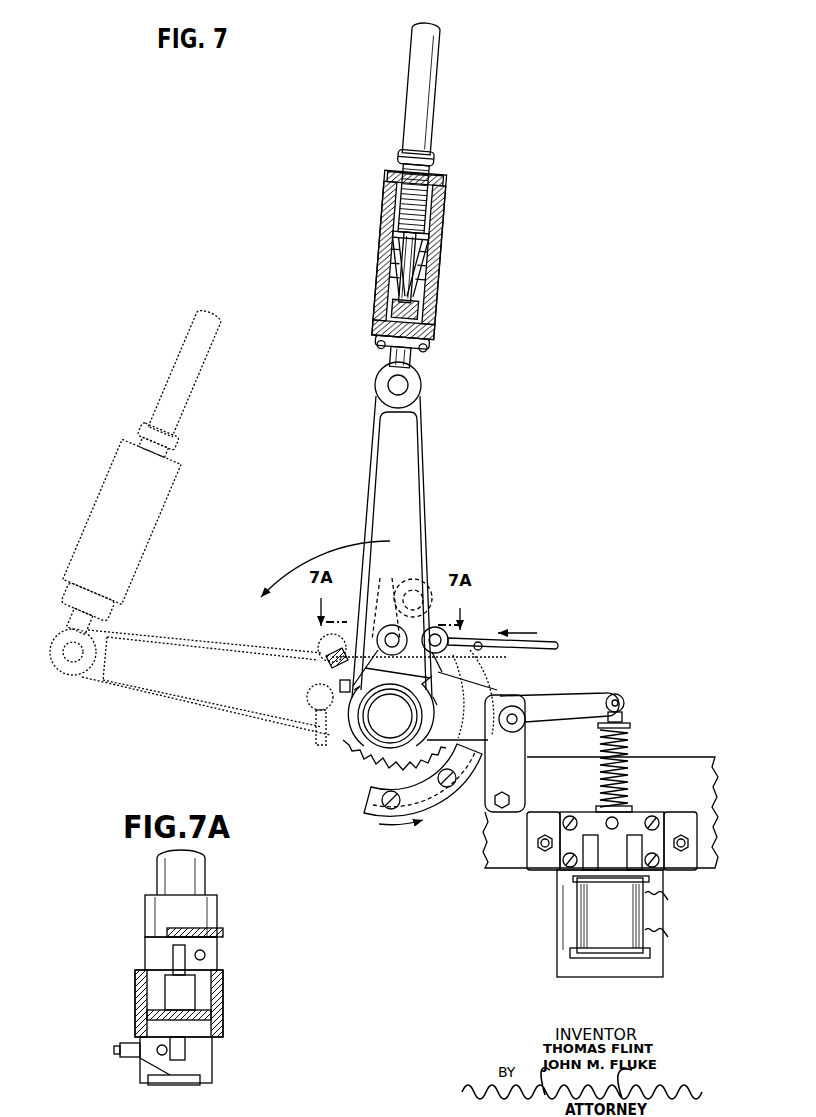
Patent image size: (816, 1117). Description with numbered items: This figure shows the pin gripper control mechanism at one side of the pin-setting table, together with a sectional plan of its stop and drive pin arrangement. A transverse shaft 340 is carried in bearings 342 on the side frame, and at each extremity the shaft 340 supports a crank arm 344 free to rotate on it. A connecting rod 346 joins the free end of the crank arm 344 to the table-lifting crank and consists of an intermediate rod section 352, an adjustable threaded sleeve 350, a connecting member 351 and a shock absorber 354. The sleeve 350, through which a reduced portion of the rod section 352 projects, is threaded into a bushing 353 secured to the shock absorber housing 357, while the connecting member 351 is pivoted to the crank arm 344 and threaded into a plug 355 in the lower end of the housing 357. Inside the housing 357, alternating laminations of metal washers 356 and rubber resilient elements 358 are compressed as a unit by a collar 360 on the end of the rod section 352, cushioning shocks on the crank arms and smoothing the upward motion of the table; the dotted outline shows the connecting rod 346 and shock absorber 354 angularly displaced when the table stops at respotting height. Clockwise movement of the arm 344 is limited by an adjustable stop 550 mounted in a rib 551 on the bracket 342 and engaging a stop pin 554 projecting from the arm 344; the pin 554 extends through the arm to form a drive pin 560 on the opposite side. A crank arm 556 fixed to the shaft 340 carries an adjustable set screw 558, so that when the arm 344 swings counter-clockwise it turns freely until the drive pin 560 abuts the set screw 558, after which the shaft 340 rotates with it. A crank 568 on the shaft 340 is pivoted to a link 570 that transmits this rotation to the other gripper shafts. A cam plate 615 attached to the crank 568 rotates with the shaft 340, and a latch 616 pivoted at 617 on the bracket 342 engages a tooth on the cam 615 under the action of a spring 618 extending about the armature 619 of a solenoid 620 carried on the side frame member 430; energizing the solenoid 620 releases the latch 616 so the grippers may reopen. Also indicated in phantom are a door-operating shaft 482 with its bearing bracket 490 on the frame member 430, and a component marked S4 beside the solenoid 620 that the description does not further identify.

In FIG. 7, the connecting rod 346 is at (174, 368).
In FIG. 7, the intermediate rod section 352 is at (424, 106).
In FIG. 7, the adjustable threaded sleeve 350 is at (419, 178).
In FIG. 7, the bushing 353 is at (388, 186).
In FIG. 7, the shock absorber 354 is at (378, 226).
In FIG. 7, the threaded plug 355 is at (385, 313).
In FIG. 7, the washers 356 is at (435, 275).
In FIG. 7, the shock absorber housing 357 is at (439, 228).
In FIG. 7, the resilient elements 358 is at (391, 282).
In FIG. 7, the collar 360 is at (427, 306).
In FIG. 7, the connecting member 351 is at (416, 360).
In FIG. 7, the crank arm 344 is at (406, 477).
In FIG. 7A, the crank arm 344 is at (204, 984).
In FIG. 7, the transverse shaft 340 is at (390, 716).
In FIG. 7A, the transverse shaft 340 is at (193, 876).
In FIG. 7, the bearing bracket 342 is at (512, 762).
In FIG. 7A, the bearing bracket 342 is at (204, 908).
In FIG. 7, the cam plate 615 is at (498, 673).
In FIG. 7, the adjustable stop 550 is at (390, 600).
In FIG. 7A, the adjustable stop 550 is at (185, 927).
In FIG. 7, the rock shaft 482 is at (422, 578).
In FIG. 7, the bearing bracket 490 is at (432, 590).
In FIG. 7, the drive pin 560 is at (388, 634).
In FIG. 7A, the drive pin 560 is at (180, 1046).
In FIG. 7, the crank 568 is at (320, 645).
In FIG. 7, the adjustable set screw 558 is at (347, 662).
In FIG. 7A, the adjustable set screw 558 is at (132, 1049).
In FIG. 7, the crank arm 556 is at (345, 689).
In FIG. 7A, the crank arm 556 is at (141, 1063).
In FIG. 7, the rib 551 is at (451, 710).
In FIG. 7A, the rib 551 is at (193, 966).
In FIG. 7A, the stop pin 554 is at (178, 957).
In FIG. 7, the link 570 is at (548, 641).
In FIG. 7, the latch 616 is at (576, 705).
In FIG. 7, the pivot 617 is at (523, 721).
In FIG. 7, the armature 619 is at (618, 718).
In FIG. 7, the spring 618 is at (630, 744).
In FIG. 7, the side frame member 430 is at (708, 861).
In FIG. 7, the solenoid 620 is at (597, 918).
In FIG. 7, the switch S4 is at (572, 928).